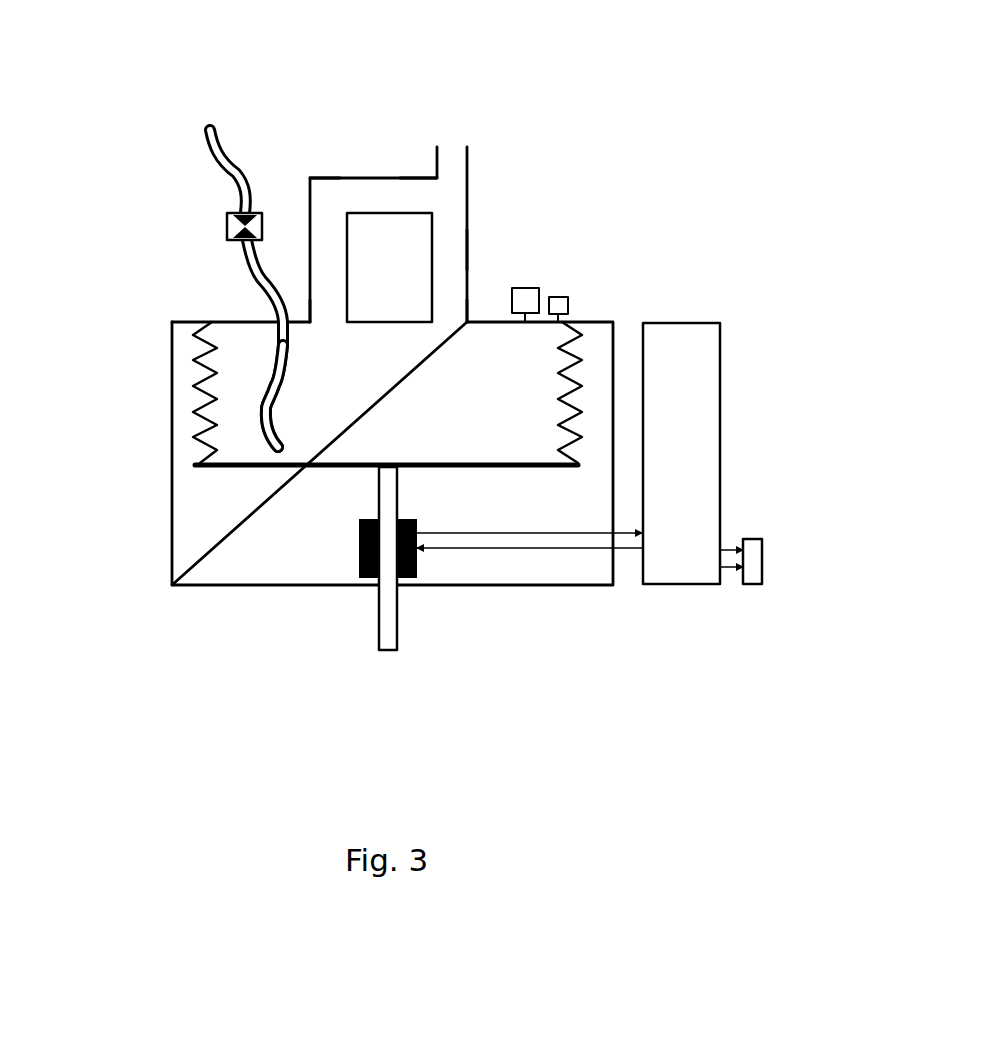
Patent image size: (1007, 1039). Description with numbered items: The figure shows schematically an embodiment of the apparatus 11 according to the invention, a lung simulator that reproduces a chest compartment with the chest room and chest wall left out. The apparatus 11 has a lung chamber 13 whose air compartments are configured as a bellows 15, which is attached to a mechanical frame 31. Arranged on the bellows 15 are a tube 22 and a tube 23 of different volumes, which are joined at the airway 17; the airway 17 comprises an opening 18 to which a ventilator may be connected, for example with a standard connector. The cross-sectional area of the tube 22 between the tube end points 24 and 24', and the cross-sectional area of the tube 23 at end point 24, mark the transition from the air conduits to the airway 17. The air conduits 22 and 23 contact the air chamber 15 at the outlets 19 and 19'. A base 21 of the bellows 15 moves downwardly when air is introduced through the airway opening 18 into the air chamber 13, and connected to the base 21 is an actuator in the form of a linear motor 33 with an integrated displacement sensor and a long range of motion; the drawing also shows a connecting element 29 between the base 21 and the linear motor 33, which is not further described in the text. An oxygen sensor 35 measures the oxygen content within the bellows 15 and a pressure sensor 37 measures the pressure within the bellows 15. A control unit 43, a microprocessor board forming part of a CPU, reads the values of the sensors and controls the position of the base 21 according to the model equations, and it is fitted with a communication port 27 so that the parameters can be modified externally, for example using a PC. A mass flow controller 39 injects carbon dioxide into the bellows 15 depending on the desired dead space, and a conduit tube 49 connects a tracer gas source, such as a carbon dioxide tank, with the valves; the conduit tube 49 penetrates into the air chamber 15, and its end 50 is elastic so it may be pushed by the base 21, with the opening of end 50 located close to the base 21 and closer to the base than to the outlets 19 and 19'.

The apparatus 11 is at (742, 83).
The lung chamber 13 is at (193, 422).
The bellows 15 is at (242, 357).
The airway 17 is at (437, 153).
The airway opening 18 is at (450, 143).
The outlet 19 is at (297, 256).
The outlet 19' is at (502, 270).
The base 21 is at (323, 470).
The tube 22 is at (306, 180).
The tube 23 is at (467, 248).
The tube end point 24 is at (389, 267).
The tube end point 24' is at (383, 161).
The communication port 27 is at (762, 550).
The piston rod 29 is at (377, 492).
The mechanical frame 31 is at (170, 448).
The linear motor 33 is at (355, 543).
The oxygen sensor 35 is at (540, 287).
The pressure sensor 37 is at (568, 300).
The mass flow controller 39 is at (227, 223).
The control unit 43 is at (720, 505).
The conduit tube 49 is at (203, 135).
The end of the conduit tube 50 is at (260, 407).